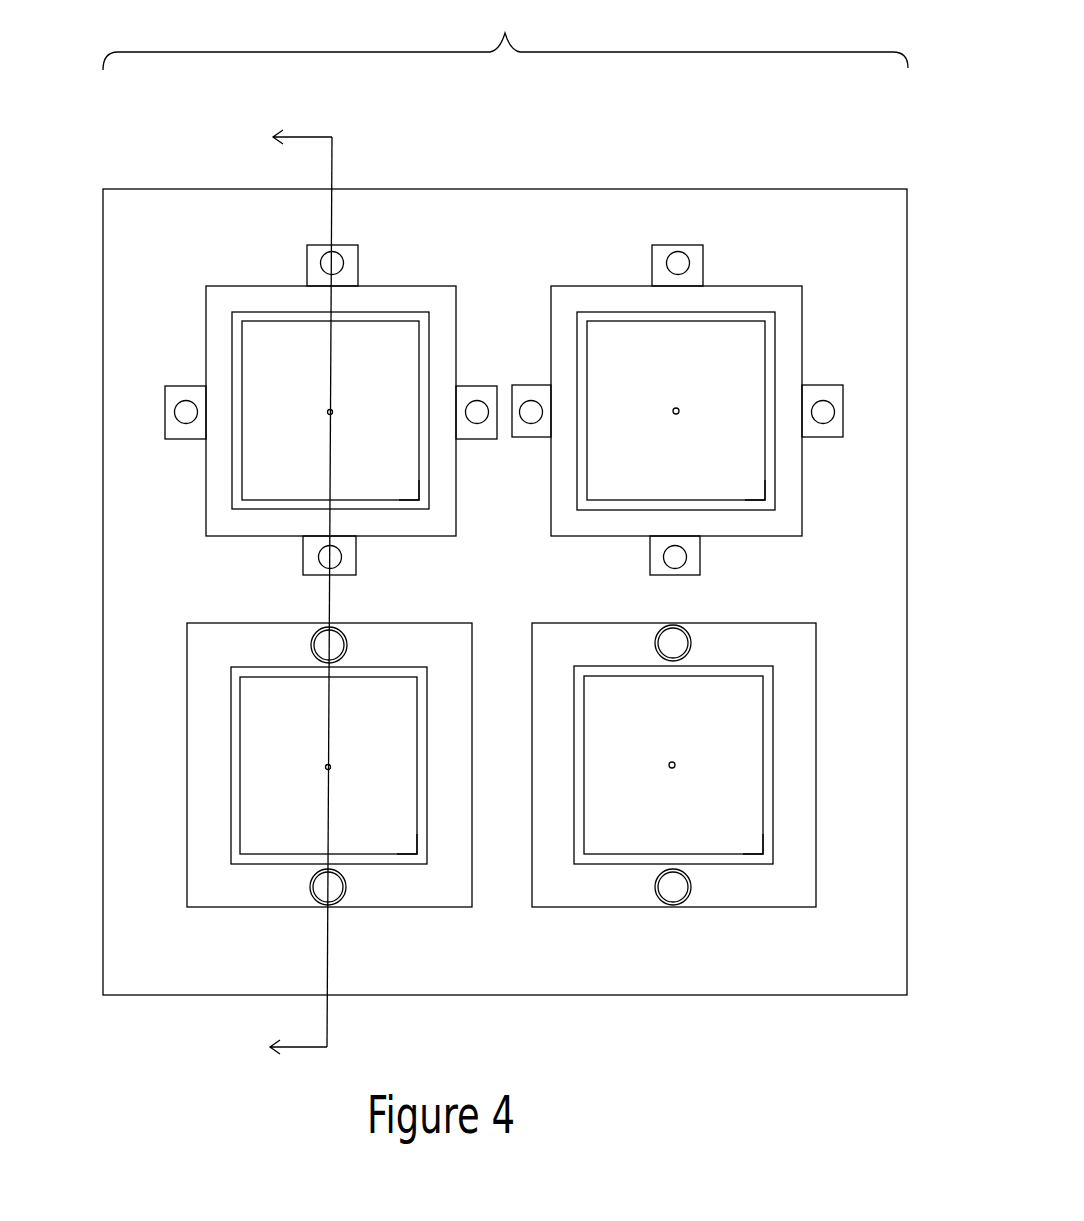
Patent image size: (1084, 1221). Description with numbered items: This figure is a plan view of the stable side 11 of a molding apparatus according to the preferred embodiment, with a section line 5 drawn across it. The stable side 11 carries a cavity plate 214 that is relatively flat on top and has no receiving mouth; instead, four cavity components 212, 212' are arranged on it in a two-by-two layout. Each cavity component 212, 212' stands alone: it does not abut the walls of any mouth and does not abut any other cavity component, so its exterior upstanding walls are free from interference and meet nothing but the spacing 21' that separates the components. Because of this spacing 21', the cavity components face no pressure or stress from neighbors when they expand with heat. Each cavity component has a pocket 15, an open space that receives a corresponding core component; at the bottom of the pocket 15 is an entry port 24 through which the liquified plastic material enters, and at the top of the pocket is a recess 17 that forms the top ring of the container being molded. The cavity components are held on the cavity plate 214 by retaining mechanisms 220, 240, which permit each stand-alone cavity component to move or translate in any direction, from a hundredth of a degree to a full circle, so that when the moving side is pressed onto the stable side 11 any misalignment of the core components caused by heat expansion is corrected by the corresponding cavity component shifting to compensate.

The stable side 11 is at (509, 18).
The section line 5- 5 is at (277, 587).
The cavity plate 214 is at (507, 187).
The cavity component 212 is at (504, 395).
The cavity component 212' is at (543, 737).
The retaining mechanism 220 is at (343, 557).
The retaining mechanism 240 is at (352, 888).
The pocket 15 is at (502, 587).
The recess 17 is at (419, 477).
The entry port 24 is at (328, 410).
The spacing 21' is at (408, 591).